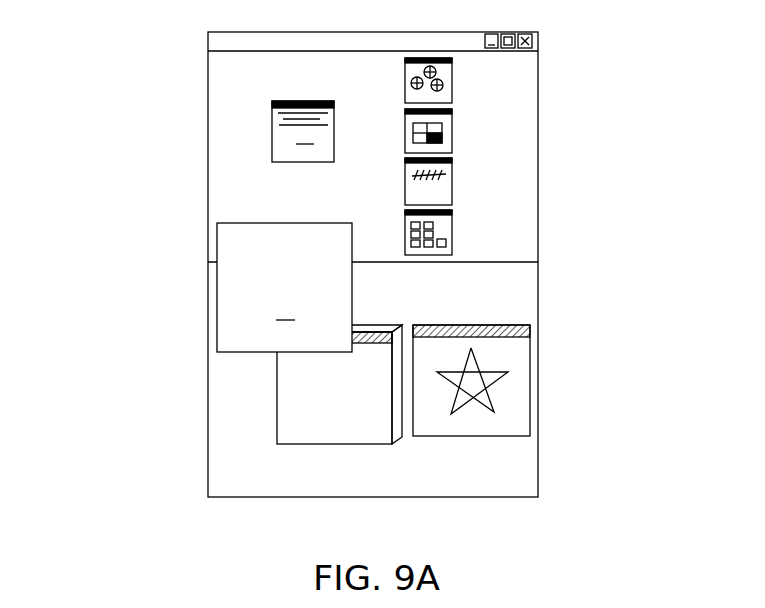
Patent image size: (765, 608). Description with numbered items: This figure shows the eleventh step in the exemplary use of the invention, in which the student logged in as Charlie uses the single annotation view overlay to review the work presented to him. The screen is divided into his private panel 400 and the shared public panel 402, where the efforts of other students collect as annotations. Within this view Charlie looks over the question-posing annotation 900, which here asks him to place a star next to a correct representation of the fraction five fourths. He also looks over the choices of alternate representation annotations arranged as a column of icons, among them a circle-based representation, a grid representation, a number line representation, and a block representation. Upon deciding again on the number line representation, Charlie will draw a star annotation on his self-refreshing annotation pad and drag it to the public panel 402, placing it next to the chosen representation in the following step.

The private panel 400 is at (538, 362).
The public panel 402 is at (538, 62).
The question-posing annotation 900 is at (273, 142).